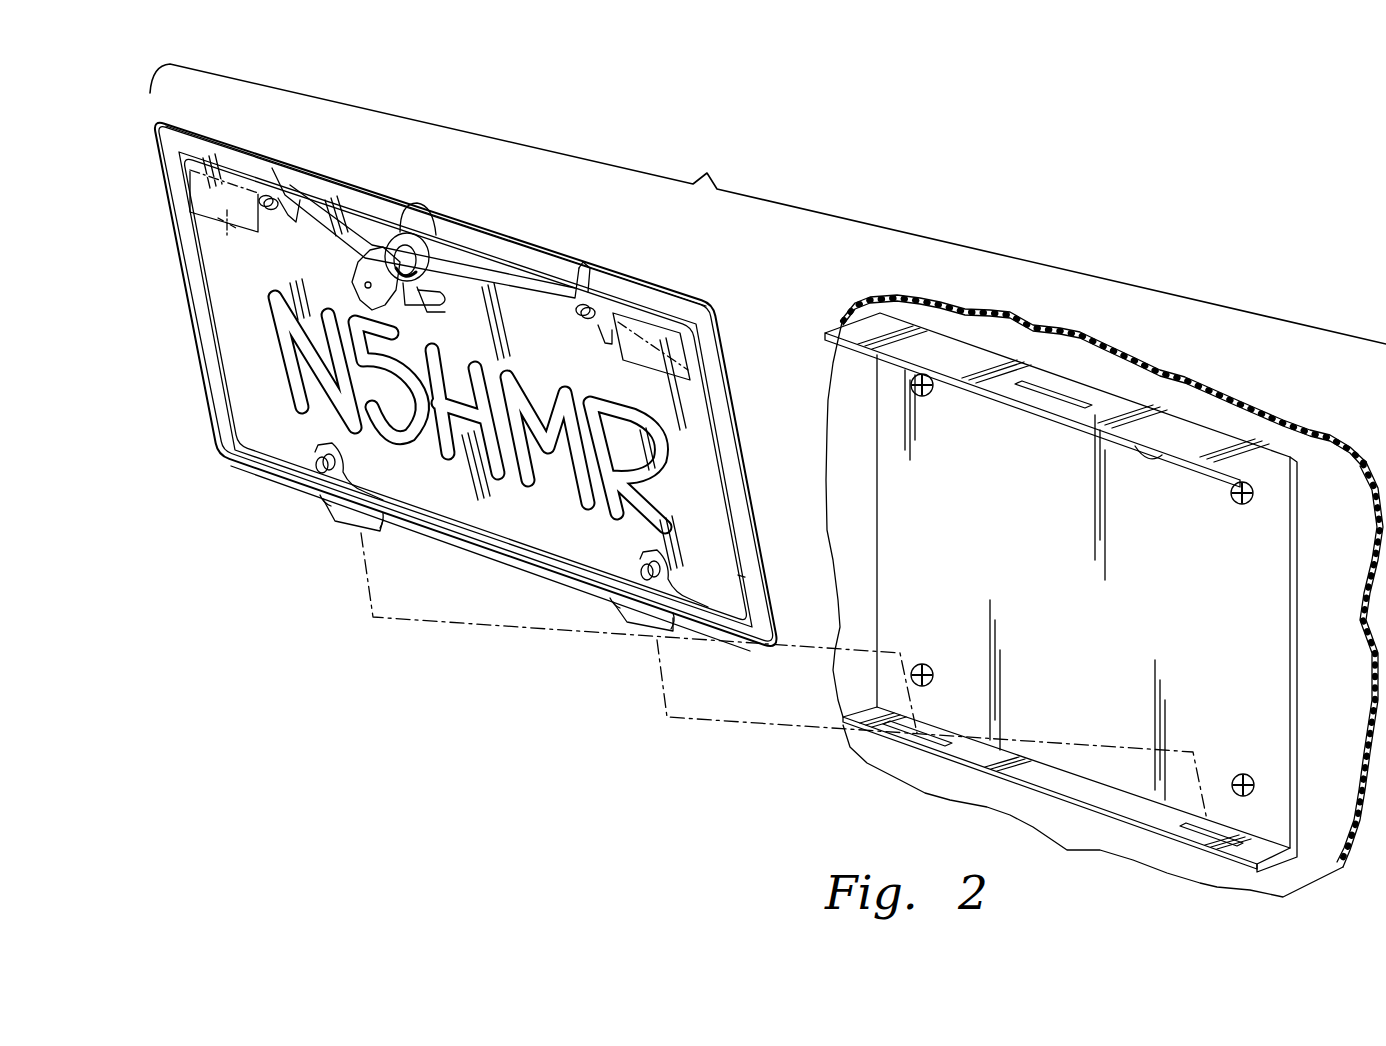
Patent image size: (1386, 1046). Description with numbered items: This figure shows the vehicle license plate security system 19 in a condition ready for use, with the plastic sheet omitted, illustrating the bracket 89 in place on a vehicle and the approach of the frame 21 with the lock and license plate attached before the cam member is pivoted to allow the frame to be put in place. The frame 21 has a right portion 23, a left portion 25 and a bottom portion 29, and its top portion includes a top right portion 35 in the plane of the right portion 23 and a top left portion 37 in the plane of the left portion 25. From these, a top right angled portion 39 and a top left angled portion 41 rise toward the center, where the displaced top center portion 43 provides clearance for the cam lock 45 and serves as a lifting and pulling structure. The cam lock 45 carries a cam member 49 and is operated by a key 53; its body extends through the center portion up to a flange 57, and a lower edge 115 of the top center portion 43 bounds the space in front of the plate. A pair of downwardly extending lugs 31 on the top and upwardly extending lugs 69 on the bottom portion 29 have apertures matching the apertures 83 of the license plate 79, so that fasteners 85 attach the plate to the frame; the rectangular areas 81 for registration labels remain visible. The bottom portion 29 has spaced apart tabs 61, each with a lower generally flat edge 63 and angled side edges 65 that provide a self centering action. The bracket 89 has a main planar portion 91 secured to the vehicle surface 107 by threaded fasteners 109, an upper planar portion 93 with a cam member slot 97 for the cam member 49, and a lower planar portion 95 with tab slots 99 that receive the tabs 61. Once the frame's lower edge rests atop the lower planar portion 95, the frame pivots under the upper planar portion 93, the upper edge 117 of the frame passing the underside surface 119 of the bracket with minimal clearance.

The vehicle license plate security system 19 is at (707, 178).
The frame 21 is at (153, 121).
The right portion 23 is at (722, 407).
The left portion 25 is at (192, 318).
The bottom portion 29 is at (475, 540).
The downwardly extending lugs 31 is at (288, 205).
The top right portion 35 is at (645, 300).
The top left portion 37 is at (233, 155).
The top right angled portion 39 is at (525, 270).
The top left angled portion 41 is at (314, 196).
The top center portion 43 is at (435, 258).
The cam lock 45 is at (405, 278).
The cam member 49 is at (413, 212).
The key 53 is at (358, 277).
The flange 57 is at (425, 288).
The tabs 61 is at (360, 535).
The lower generally flat edge 63 is at (333, 520).
The angled side edges 65 is at (320, 510).
The upwardly extending lugs 69 is at (348, 463).
The license plate 79 is at (497, 243).
The rectangular areas 81 is at (234, 242).
The apertures 83 is at (270, 212).
The fasteners 85 is at (585, 322).
The bracket 89 is at (842, 328).
The main planar portion 91 is at (1021, 577).
The upper planar portion 93 is at (945, 355).
The lower planar portion 95 is at (1055, 778).
The cam member slot 97 is at (1070, 400).
The tab slots 99 is at (915, 735).
The vehicle surface 107 is at (1250, 410).
The threaded fasteners 109 is at (930, 392).
The lower edge 115 is at (455, 292).
The upper edge 117 is at (588, 265).
The underside surface 119 is at (1170, 448).